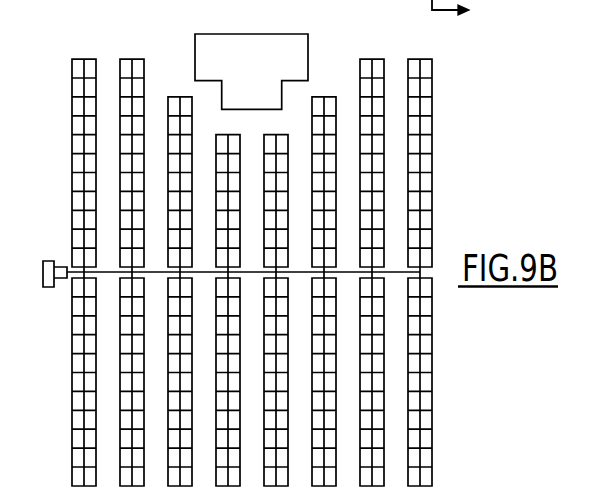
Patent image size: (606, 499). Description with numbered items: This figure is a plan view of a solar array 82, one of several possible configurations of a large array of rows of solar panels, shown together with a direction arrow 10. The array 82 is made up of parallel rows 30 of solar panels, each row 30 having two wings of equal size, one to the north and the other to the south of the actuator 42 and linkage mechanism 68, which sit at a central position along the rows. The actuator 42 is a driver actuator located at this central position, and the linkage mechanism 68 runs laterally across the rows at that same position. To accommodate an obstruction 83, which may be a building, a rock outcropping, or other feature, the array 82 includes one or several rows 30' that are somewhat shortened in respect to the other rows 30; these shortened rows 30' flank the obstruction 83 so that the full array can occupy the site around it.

The view direction arrow 10 is at (463, 11).
The row of solar panels 30 is at (83, 256).
The shortened row 30' is at (253, 249).
The actuator 42 is at (43, 271).
The linkage mechanism 68 is at (155, 278).
The solar array 82 is at (46, 164).
The obstruction 83 is at (250, 42).